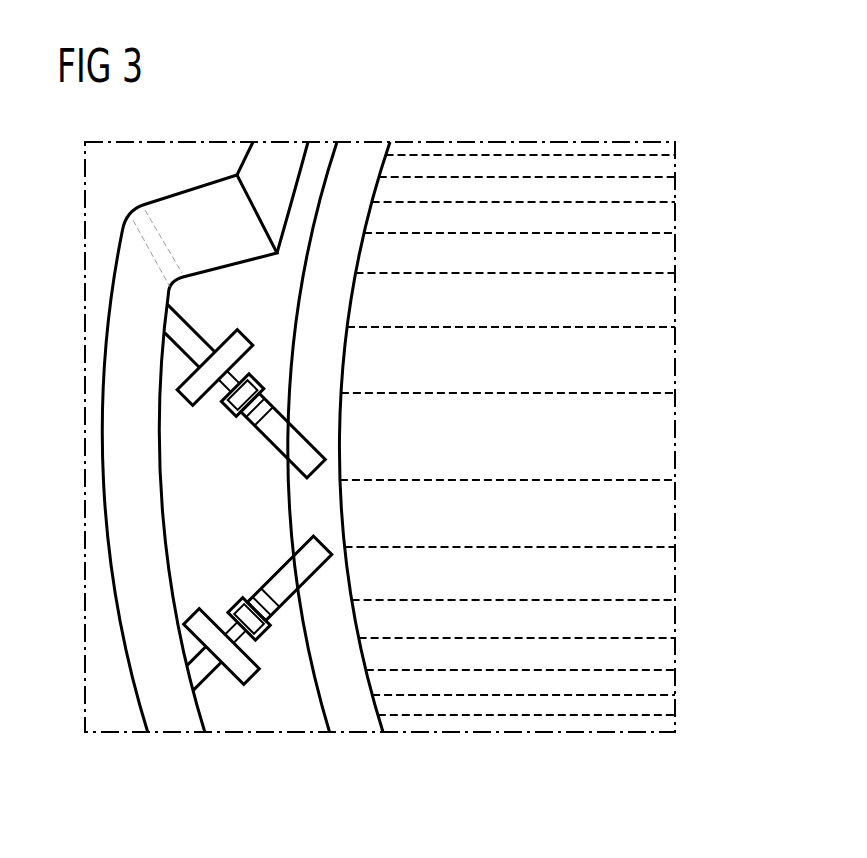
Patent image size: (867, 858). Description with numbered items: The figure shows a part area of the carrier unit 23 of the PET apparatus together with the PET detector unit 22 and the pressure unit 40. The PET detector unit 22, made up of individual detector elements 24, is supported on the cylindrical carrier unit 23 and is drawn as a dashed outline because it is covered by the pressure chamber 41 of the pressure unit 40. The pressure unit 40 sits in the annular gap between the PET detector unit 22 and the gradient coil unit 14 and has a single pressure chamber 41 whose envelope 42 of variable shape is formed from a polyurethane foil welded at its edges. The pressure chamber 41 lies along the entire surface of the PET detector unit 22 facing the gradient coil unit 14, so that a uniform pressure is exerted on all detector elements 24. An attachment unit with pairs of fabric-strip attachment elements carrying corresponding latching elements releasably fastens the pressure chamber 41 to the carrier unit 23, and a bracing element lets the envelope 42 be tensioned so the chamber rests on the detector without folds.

The gradient coil unit 14 is at (212, 195).
The PET detector unit 22 is at (500, 147).
The carrier unit 23 is at (255, 280).
The detector elements 24 is at (660, 302).
The pressure unit 40 is at (353, 704).
The pressure chamber 41 is at (308, 664).
The envelope 42 is at (358, 168).